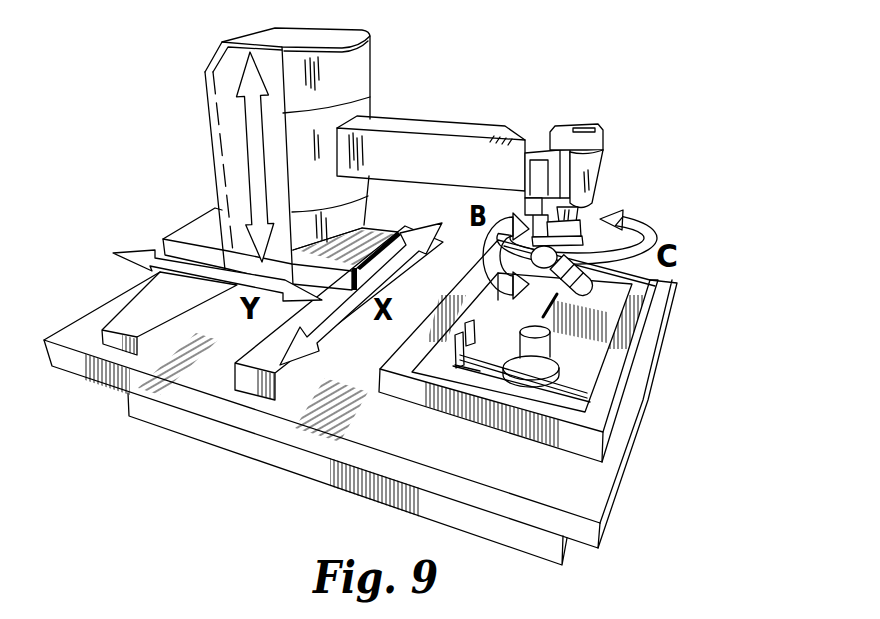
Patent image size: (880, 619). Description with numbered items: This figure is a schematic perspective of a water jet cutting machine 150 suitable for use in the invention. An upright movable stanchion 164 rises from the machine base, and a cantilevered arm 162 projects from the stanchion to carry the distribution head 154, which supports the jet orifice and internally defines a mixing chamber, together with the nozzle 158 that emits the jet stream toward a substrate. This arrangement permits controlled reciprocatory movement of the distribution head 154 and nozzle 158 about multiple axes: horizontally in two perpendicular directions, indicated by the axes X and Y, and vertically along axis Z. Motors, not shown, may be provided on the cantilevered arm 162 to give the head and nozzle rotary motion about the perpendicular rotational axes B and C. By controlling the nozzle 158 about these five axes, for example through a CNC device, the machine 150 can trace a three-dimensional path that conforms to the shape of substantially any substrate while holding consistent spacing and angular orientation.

The water jet cutting machine 150 is at (682, 393).
The distribution head 154 is at (650, 274).
The nozzle 158 is at (598, 303).
The cantilevered arm 162 is at (390, 148).
The upright movable stanchion 164 is at (214, 152).